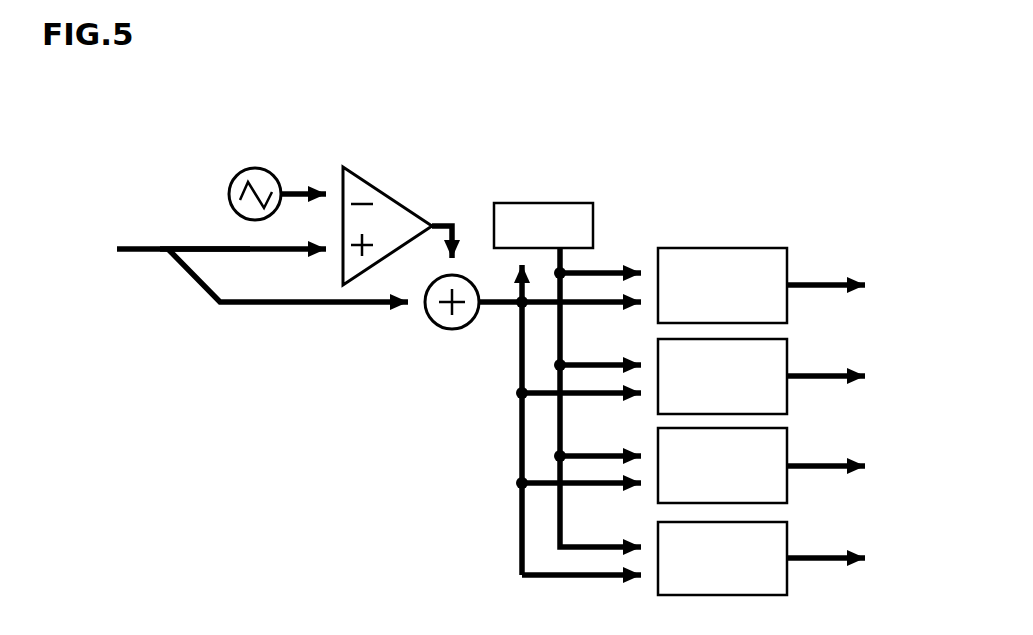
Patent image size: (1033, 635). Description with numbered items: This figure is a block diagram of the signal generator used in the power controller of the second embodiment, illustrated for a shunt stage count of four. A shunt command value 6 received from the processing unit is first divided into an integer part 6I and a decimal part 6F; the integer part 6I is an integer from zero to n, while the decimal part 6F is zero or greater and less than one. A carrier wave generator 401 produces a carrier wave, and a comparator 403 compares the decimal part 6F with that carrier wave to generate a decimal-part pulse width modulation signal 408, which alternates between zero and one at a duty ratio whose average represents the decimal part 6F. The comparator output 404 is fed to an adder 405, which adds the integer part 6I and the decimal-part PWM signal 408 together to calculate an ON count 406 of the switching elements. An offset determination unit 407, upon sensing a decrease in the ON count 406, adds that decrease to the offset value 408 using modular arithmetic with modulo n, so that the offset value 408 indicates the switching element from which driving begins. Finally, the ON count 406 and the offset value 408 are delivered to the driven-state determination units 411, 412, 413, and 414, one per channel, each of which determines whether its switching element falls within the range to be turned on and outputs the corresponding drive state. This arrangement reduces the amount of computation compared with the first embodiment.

The shunt command value 6 is at (122, 242).
The decimal part 6F is at (210, 245).
The integer part 6I is at (215, 303).
The carrier wave generator 401 is at (230, 175).
The comparator 403 is at (340, 165).
The amplifier output signal 404 is at (450, 222).
The adder 405 is at (432, 325).
The ON count 406 is at (513, 343).
The offset determination unit 407 is at (553, 200).
The decimal-part PWM signal 408 is at (610, 265).
The driven-state determination unit 411 is at (788, 262).
The driven-state determination unit 412 is at (788, 353).
The driven-state determination unit 413 is at (788, 442).
The driven-state determination unit 414 is at (788, 536).